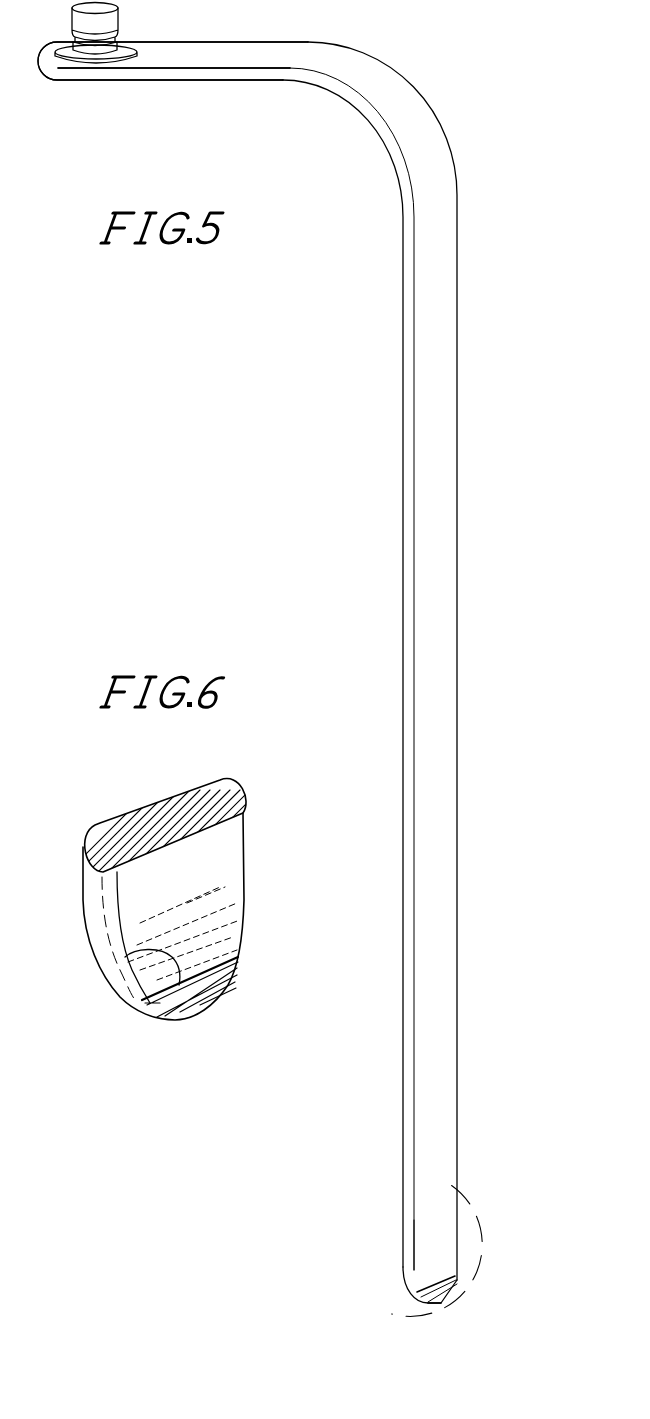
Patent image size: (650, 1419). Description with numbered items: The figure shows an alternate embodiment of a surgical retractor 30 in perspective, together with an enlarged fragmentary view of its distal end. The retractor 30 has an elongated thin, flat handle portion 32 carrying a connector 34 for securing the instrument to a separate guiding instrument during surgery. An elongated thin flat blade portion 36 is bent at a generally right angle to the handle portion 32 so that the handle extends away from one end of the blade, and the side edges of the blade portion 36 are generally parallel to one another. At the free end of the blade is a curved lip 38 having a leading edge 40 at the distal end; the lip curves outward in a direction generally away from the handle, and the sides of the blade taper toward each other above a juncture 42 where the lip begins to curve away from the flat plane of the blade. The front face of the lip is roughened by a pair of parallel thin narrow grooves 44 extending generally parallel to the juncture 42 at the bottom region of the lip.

In FIG. 5, the retractor 30 is at (478, 141).
In FIG. 5, the handle portion 32 is at (258, 56).
In FIG. 5, the connector 34 is at (112, 20).
In FIG. 5, the blade portion 36 is at (445, 268).
In FIG. 6, the blade portion 36 is at (195, 857).
In FIG. 5, the curved lip 38 is at (396, 1285).
In FIG. 5, the leading edge 40 is at (443, 1303).
In FIG. 6, the leading edge 40 is at (209, 1010).
In FIG. 5, the juncture 42 is at (455, 1262).
In FIG. 6, the juncture 42 is at (190, 930).
In FIG. 5, the grooves 44 is at (432, 1272).
In FIG. 6, the grooves 44 is at (125, 957).